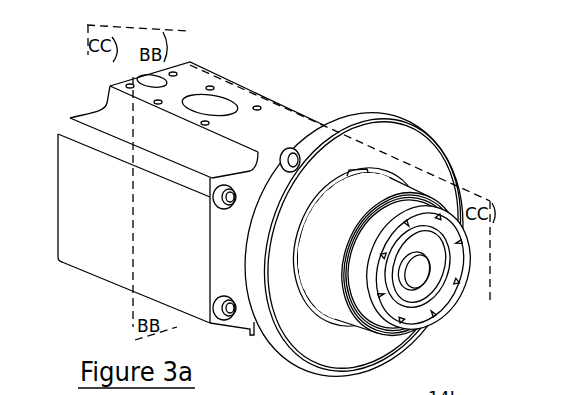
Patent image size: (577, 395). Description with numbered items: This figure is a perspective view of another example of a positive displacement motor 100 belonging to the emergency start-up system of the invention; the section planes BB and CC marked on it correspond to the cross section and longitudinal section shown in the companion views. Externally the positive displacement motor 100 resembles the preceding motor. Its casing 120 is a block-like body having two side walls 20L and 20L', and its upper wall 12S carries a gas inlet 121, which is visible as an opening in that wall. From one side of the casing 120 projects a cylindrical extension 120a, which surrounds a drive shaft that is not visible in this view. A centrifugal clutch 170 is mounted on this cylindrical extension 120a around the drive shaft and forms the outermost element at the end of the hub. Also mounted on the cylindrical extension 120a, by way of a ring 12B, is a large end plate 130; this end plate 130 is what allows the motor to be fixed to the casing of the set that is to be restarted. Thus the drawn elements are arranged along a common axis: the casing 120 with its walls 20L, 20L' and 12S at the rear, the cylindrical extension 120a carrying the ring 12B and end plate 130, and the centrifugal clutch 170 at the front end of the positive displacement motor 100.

The positive displacement motor 100 is at (354, 80).
The casing 120 is at (207, 73).
The gas inlet 121 is at (207, 104).
The upper wall 12S is at (130, 76).
The side wall 20L is at (126, 228).
The side wall 20L' is at (220, 106).
The end plate 130 is at (374, 112).
The ring 12B is at (333, 178).
The cylindrical extension 120a is at (362, 203).
The centrifugal clutch 170 is at (395, 165).